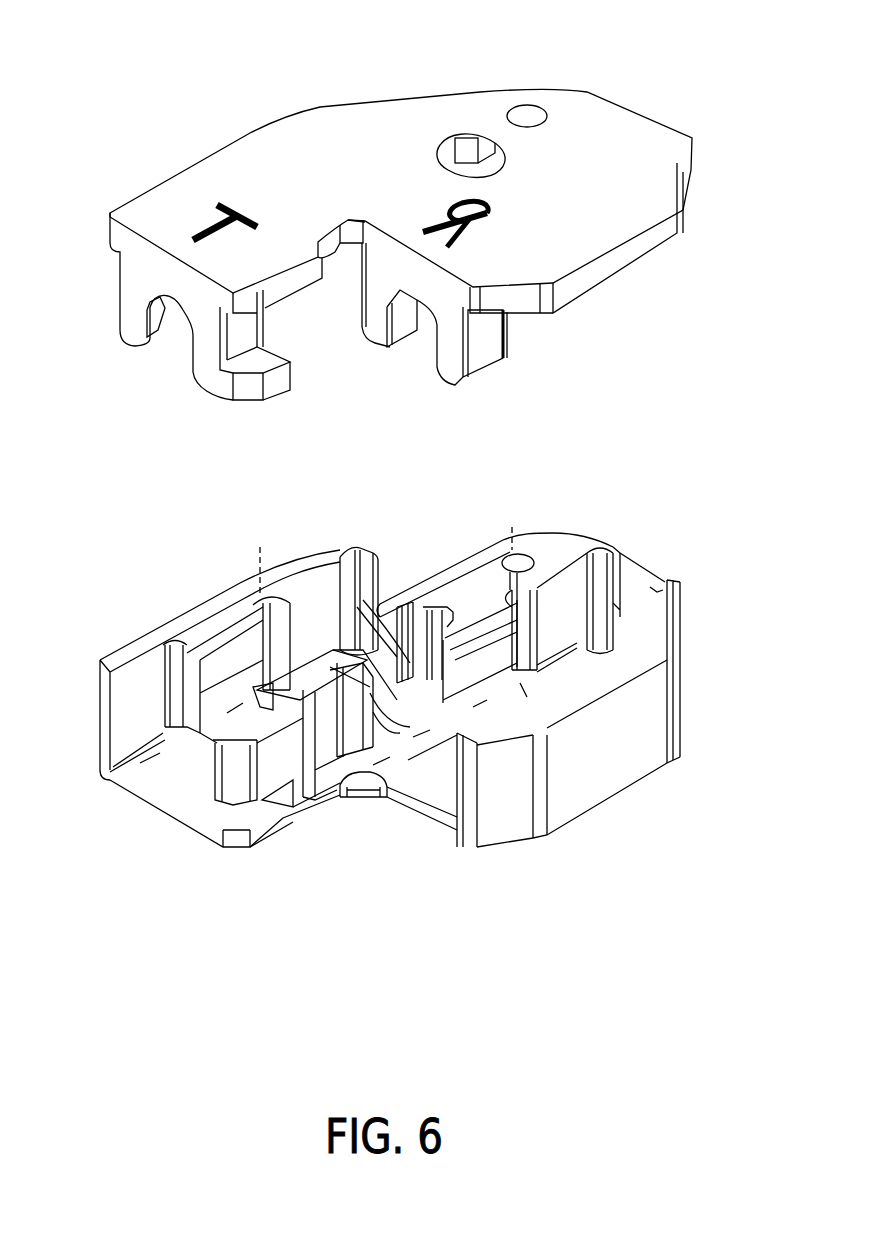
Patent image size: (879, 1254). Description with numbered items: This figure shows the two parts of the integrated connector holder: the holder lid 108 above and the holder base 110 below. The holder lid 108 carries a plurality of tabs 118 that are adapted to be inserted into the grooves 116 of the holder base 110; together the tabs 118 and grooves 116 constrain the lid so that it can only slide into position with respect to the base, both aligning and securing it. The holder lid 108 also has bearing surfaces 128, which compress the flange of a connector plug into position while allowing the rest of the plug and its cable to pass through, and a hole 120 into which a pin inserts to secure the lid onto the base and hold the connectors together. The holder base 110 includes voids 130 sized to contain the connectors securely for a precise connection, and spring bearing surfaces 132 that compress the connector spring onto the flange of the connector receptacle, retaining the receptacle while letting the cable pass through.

The holder lid 108 is at (429, 222).
The holder base 110 is at (410, 661).
The grooves 116 is at (263, 815).
The tabs 118 is at (272, 392).
The hole 120 is at (527, 112).
The bearing surfaces 128 is at (506, 345).
The voids 130 is at (565, 613).
The spring bearing surfaces 132 is at (357, 597).